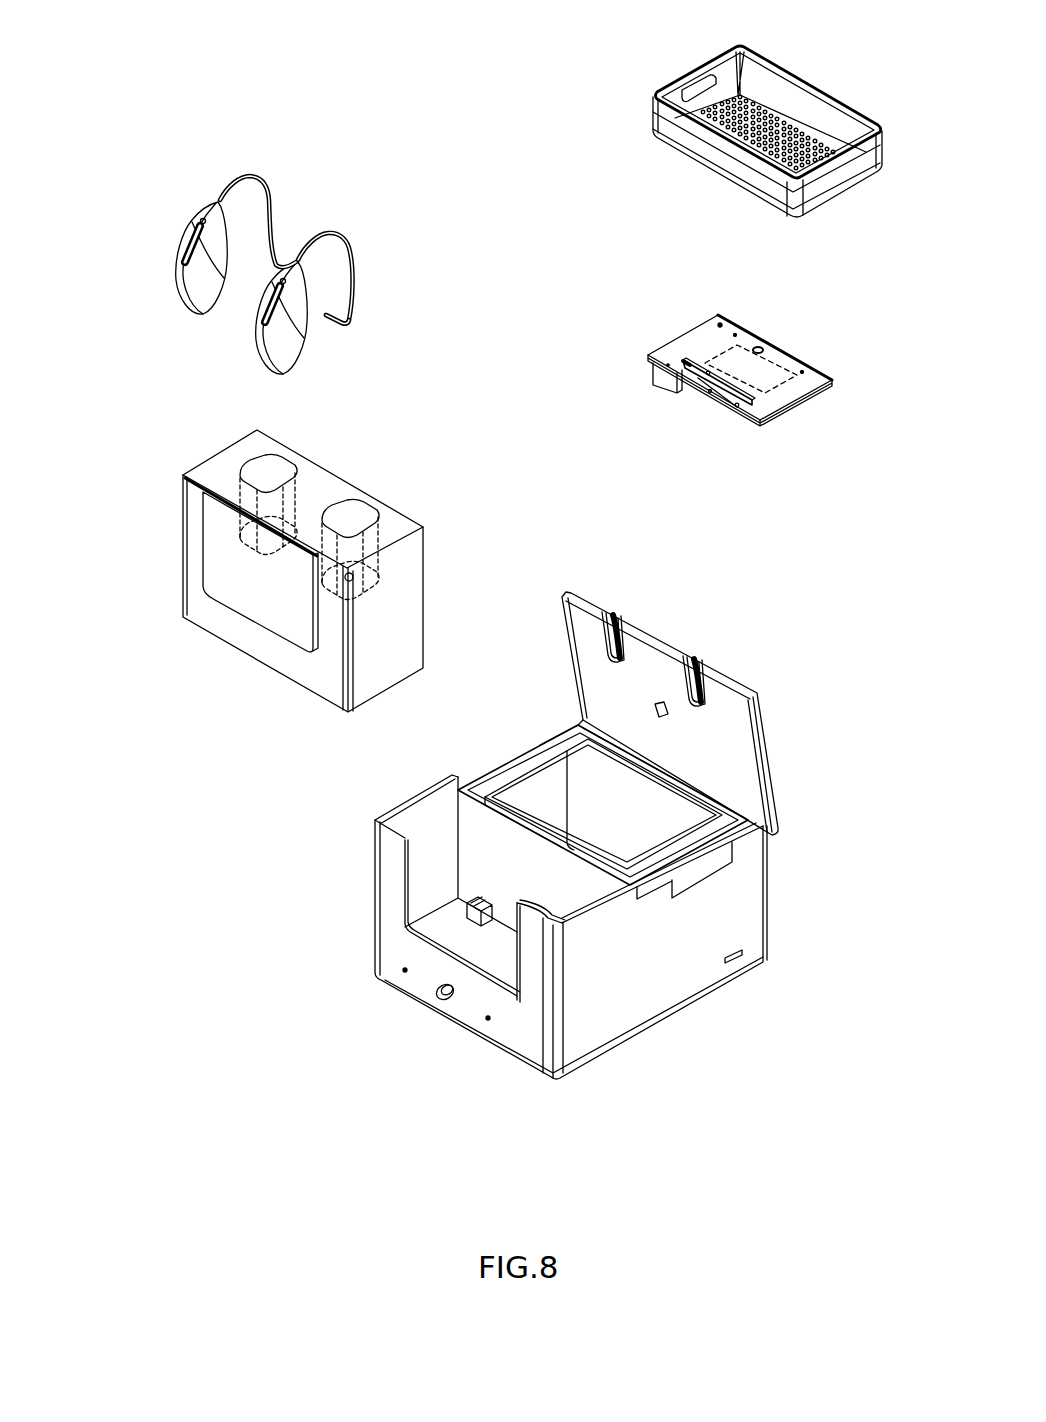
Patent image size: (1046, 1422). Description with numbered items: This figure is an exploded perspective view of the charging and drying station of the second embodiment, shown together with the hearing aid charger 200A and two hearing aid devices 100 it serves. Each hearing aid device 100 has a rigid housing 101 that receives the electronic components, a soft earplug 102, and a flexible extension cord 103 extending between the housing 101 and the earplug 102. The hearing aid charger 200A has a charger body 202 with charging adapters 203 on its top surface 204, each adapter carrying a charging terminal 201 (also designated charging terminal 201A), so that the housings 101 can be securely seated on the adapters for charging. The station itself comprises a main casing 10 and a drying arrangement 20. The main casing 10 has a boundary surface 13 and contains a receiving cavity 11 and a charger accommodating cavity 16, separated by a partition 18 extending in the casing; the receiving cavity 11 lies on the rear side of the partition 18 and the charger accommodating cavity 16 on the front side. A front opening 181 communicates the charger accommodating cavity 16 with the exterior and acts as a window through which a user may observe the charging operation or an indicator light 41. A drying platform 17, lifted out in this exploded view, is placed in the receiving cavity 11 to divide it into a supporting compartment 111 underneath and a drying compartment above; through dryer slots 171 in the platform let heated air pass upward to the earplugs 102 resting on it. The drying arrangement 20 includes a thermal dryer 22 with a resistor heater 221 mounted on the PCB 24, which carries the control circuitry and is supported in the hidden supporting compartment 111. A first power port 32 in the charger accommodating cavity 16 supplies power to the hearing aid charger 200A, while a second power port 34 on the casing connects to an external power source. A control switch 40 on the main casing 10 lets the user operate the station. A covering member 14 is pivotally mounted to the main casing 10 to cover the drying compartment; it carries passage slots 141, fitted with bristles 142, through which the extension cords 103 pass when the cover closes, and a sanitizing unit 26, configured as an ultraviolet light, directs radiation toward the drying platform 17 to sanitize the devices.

The hearing aid device 100 is at (231, 233).
The housing 101 is at (198, 218).
The earplug 102 is at (349, 267).
The extension cord 103 is at (250, 177).
The hearing aid charger 200A is at (306, 539).
The charging terminal 201 is at (263, 525).
The charging terminal 201A is at (362, 574).
The charger body 202 is at (215, 623).
The charging adapters 203 is at (284, 462).
The top surface 204 is at (330, 487).
The drying platform 17 is at (768, 121).
The through dryer slots 171 is at (762, 125).
The drying arrangement 20 is at (796, 330).
The thermal dryer 22 is at (707, 339).
The resistor heater 221 is at (740, 360).
The PCB 24 is at (778, 355).
The main casing 10 is at (553, 808).
The receiving cavity 11 is at (540, 785).
The supporting compartment 111 is at (650, 857).
The boundary surface 13 is at (720, 958).
The covering member 14 is at (738, 649).
The passage slots 141 is at (616, 621).
The bristles 142 is at (604, 612).
The charger accommodating cavity 16 is at (502, 960).
The partition 18 is at (428, 963).
The front opening 181 is at (455, 938).
The sanitizing unit 26 is at (660, 703).
The first power port 32 is at (492, 922).
The second power port 34 is at (742, 958).
The control switch 40 is at (445, 996).
The indicator light 41 is at (403, 970).